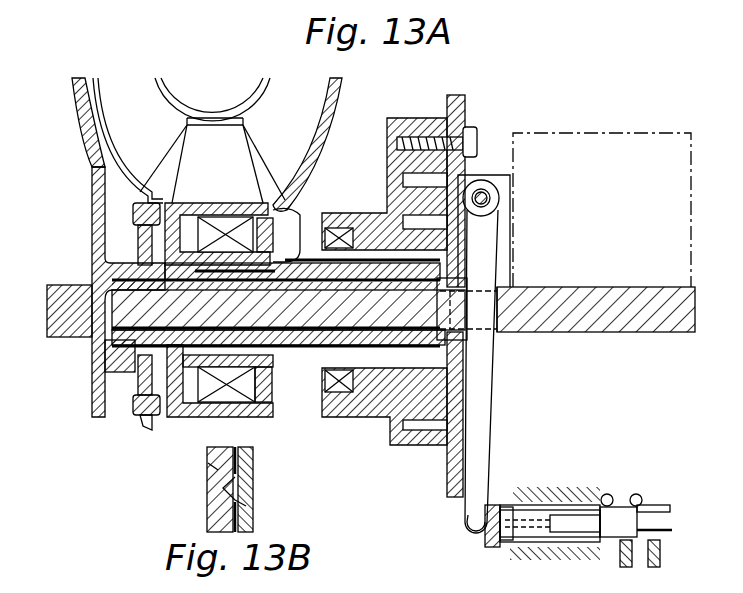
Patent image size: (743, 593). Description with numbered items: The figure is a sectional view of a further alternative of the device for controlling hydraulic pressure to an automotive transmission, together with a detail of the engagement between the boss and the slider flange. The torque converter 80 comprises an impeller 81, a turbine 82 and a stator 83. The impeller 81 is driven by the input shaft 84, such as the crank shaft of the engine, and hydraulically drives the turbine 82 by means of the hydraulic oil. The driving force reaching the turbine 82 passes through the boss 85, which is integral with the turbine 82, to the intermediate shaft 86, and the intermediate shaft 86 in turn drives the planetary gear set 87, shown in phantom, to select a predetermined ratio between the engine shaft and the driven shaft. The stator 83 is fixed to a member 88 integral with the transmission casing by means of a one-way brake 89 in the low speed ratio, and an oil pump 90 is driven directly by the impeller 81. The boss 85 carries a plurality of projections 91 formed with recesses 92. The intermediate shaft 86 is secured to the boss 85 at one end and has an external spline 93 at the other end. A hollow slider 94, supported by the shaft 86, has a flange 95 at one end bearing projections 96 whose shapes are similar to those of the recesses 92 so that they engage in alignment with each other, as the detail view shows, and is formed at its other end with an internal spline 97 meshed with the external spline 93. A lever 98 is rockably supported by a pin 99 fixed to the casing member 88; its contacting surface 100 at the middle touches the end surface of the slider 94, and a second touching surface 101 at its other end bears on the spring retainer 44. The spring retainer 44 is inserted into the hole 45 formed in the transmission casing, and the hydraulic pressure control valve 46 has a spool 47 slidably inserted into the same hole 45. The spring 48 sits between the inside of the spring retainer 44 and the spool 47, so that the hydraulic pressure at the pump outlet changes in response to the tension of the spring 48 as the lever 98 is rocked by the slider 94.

In FIG. 13A, the torque converter 80 is at (337, 99).
In FIG. 13A, the impeller 81 is at (298, 121).
In FIG. 13A, the turbine 82 is at (148, 121).
In FIG. 13A, the stator 83 is at (231, 161).
In FIG. 13A, the input shaft 84 is at (65, 290).
In FIG. 13A, the boss 85 is at (137, 237).
In FIG. 13B, the boss 85 is at (207, 497).
In FIG. 13A, the intermediate shaft 86 is at (318, 327).
In FIG. 13A, the planetary gear set 87 is at (590, 133).
In FIG. 13A, the transmission casing member 88 is at (467, 99).
In FIG. 13A, the one-way brake 89 is at (340, 255).
In FIG. 13A, the oil pump 90 is at (397, 200).
In FIG. 13A, the projections 91 is at (127, 265).
In FIG. 13B, the projections 91 is at (208, 463).
In FIG. 13B, the recesses 92 is at (232, 482).
In FIG. 13A, the external spline 93 is at (467, 309).
In FIG. 13A, the slider 94 is at (280, 220).
In FIG. 13A, the flange 95 is at (180, 245).
In FIG. 13B, the flange 95 is at (252, 455).
In FIG. 13B, the projections 96 is at (238, 500).
In FIG. 13A, the internal spline 97 is at (468, 277).
In FIG. 13A, the lever 98 is at (487, 415).
In FIG. 13A, the pin 99 is at (483, 190).
In FIG. 13A, the contacting surface 100 is at (497, 330).
In FIG. 13A, the second touching surface 101 is at (478, 530).
In FIG. 13A, the spring retainer 44 is at (545, 500).
In FIG. 13A, the hole 45 is at (503, 505).
In FIG. 13A, the hydraulic pressure control valve 46 is at (625, 506).
In FIG. 13A, the spool 47 is at (655, 516).
In FIG. 13A, the spring 48 is at (507, 547).